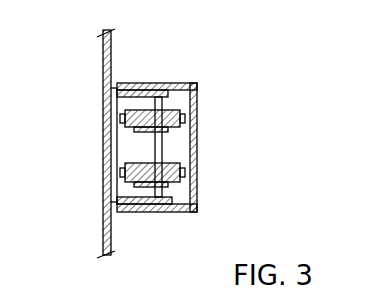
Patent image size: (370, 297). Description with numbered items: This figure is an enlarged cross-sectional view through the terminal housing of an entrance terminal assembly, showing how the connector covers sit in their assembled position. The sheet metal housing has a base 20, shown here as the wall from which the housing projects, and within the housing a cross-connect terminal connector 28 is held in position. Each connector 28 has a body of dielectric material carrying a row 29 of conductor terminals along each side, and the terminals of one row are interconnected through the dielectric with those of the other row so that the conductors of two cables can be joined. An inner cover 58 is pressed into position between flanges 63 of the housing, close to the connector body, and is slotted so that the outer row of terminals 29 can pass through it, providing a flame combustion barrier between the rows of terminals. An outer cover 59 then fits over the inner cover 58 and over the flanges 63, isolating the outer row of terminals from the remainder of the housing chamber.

The base 20 is at (82, 143).
The terminal connectors 28 is at (117, 145).
The row of conductor terminals 29 is at (186, 142).
The inner cover 58 is at (201, 147).
The cover 59 is at (178, 134).
The flanges 63 is at (156, 146).